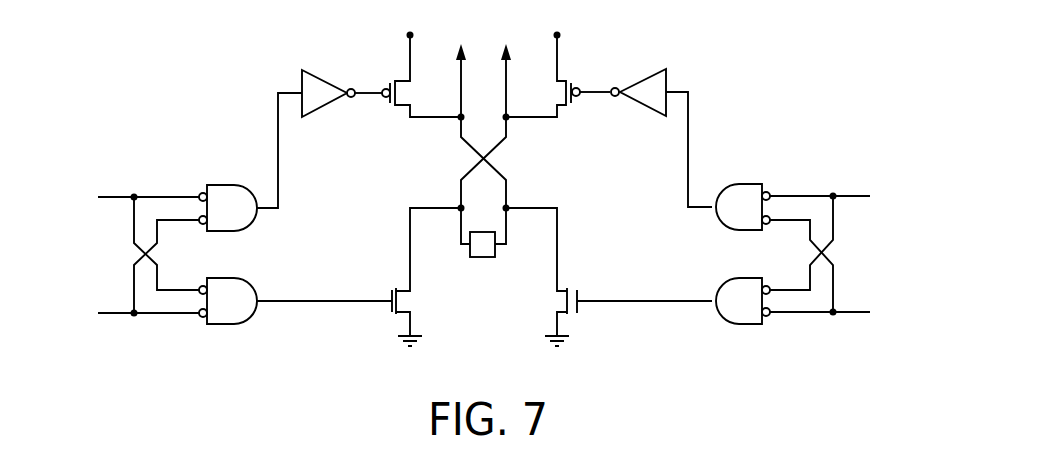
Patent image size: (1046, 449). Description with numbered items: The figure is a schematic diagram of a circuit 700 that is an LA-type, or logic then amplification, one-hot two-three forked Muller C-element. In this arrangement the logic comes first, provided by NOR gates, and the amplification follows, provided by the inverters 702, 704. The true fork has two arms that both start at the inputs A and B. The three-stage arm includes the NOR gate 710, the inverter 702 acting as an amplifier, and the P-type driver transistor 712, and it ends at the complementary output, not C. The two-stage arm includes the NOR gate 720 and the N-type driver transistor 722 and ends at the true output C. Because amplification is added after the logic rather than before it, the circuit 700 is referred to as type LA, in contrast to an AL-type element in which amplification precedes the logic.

The MCE circuit 700 is at (727, 69).
The inverter 702 is at (320, 78).
The inverter 704 is at (643, 78).
The NOR gate 710 is at (223, 184).
The P-type driver transistor 712 is at (393, 108).
The NOR gate 720 is at (238, 278).
The N-type driver transistor 722 is at (390, 290).